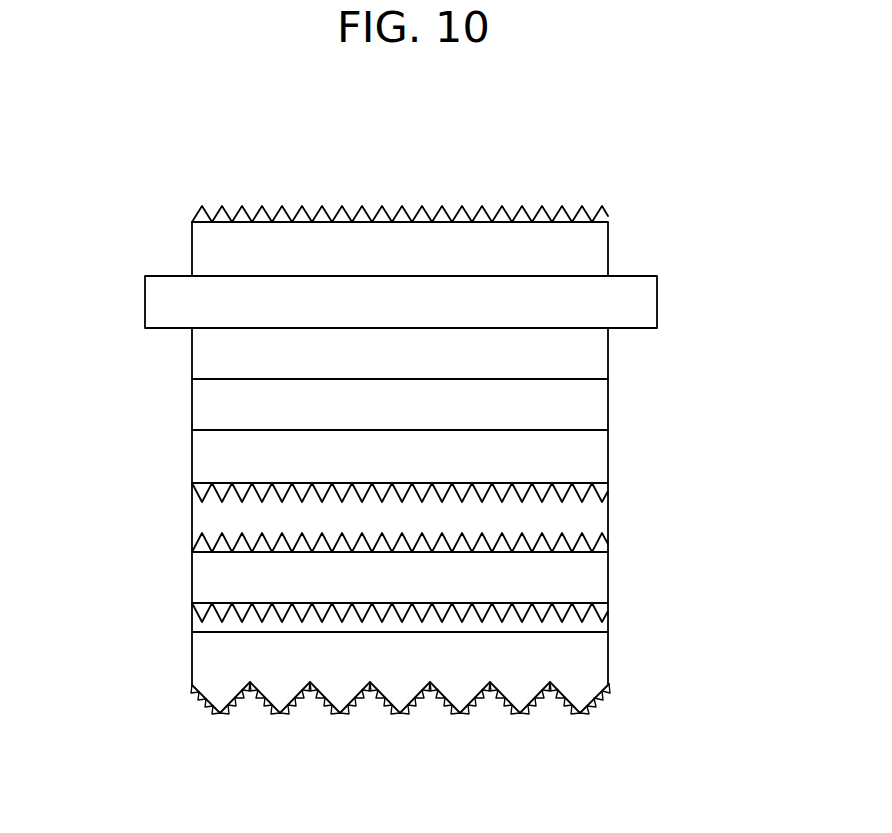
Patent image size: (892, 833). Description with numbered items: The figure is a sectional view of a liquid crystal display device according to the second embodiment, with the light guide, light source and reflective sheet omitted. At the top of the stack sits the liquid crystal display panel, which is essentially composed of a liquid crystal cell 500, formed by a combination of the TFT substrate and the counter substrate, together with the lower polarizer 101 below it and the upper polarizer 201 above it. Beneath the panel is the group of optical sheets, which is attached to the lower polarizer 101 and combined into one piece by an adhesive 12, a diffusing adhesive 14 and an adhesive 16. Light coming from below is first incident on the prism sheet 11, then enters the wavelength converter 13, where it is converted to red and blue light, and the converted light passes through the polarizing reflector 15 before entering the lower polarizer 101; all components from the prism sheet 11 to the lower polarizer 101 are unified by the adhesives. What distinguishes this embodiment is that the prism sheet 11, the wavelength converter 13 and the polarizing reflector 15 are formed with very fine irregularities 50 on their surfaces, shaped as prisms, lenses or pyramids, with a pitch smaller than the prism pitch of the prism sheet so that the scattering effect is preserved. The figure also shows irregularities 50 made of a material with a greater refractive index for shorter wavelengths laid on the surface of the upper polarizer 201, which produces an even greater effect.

The prism sheet 11 is at (590, 663).
The adhesive 12 is at (590, 628).
The wavelength converter 13 is at (590, 582).
The diffusing adhesive 14 is at (590, 520).
The polarizing reflector 15 is at (590, 460).
The adhesive 16 is at (590, 410).
The fine irregularities 50 is at (522, 209).
The lower polarizer 101 is at (590, 356).
The upper polarizer 201 is at (590, 252).
The liquid crystal cell 500 is at (638, 303).